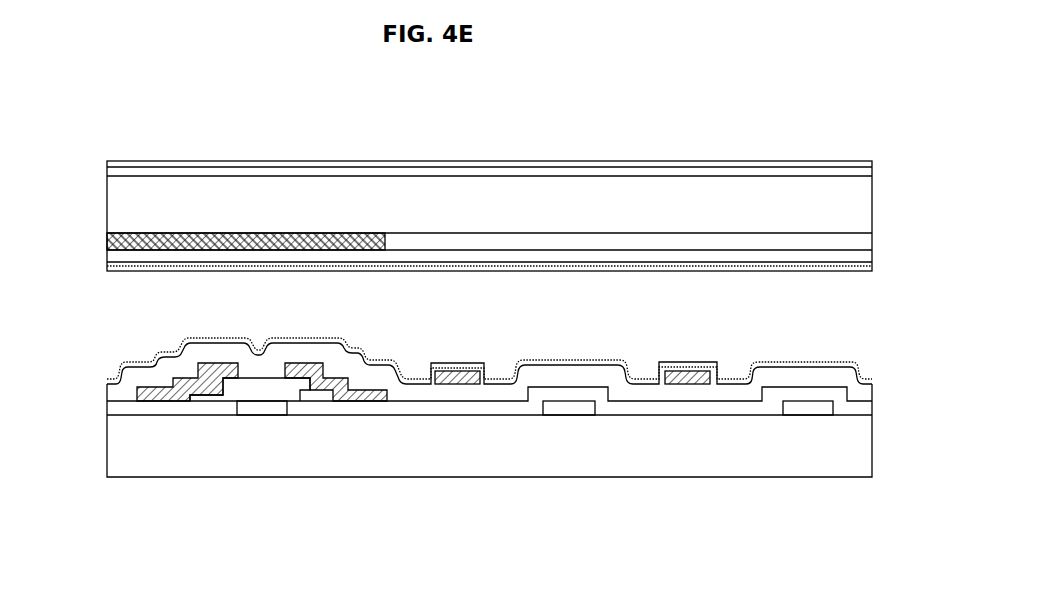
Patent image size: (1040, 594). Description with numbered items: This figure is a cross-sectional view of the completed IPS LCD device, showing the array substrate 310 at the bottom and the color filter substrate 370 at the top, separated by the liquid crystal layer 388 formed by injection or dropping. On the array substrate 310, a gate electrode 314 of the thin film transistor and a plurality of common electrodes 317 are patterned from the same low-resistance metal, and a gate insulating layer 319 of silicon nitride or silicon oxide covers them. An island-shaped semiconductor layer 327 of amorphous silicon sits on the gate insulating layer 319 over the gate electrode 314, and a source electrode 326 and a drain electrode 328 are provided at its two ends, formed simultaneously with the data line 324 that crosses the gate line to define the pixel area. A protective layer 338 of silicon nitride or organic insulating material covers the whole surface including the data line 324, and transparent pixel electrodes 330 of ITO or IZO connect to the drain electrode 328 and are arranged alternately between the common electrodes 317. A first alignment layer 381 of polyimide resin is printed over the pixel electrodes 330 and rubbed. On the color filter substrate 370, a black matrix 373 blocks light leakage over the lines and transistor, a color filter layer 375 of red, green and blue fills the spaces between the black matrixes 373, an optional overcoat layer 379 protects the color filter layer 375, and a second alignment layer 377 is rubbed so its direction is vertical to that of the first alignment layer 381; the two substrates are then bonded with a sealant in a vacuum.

The array substrate 310 is at (823, 460).
The gate electrode 314 is at (263, 415).
The common electrodes 317 is at (572, 408).
The gate insulating layer 319 is at (840, 380).
The data line 324 is at (152, 372).
The source electrode 326 is at (203, 385).
The semiconductor layer 327 is at (205, 399).
The drain electrode 328 is at (308, 368).
The pixel electrodes 330 is at (458, 373).
The protective layer 338 is at (862, 397).
The color filter substrate 370 is at (818, 186).
The black matrix 373 is at (262, 233).
The color filter layer 375 is at (540, 240).
The second alignment layer 377 is at (107, 270).
The overcoat layer 379 is at (107, 253).
The first alignment layer 381 is at (386, 364).
The liquid crystal layer 388 is at (509, 330).